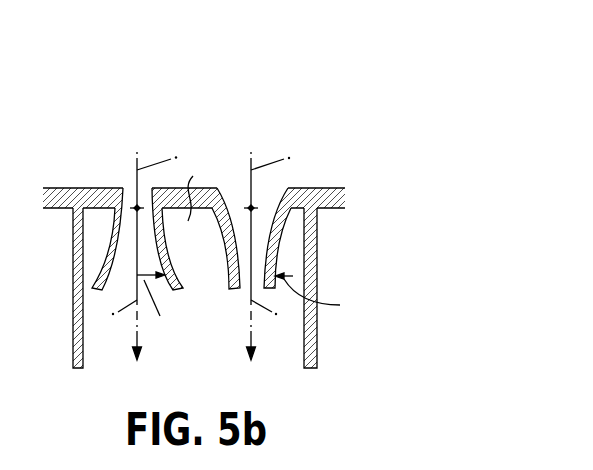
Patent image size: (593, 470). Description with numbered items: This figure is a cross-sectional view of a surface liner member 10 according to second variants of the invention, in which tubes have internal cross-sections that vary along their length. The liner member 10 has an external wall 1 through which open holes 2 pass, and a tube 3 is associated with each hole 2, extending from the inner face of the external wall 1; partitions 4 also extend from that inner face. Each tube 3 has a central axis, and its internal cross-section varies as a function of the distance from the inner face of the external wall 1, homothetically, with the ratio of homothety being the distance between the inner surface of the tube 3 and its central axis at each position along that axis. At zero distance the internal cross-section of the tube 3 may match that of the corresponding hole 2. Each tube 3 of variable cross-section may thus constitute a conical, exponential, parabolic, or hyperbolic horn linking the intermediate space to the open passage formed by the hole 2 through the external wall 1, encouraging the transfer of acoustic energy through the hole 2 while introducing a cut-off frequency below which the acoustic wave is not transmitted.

The external wall 1 is at (100, 203).
The open hole 2 is at (126, 178).
The tube 3 is at (228, 270).
The partition 4 is at (73, 283).
The surface liner member 10 is at (294, 132).